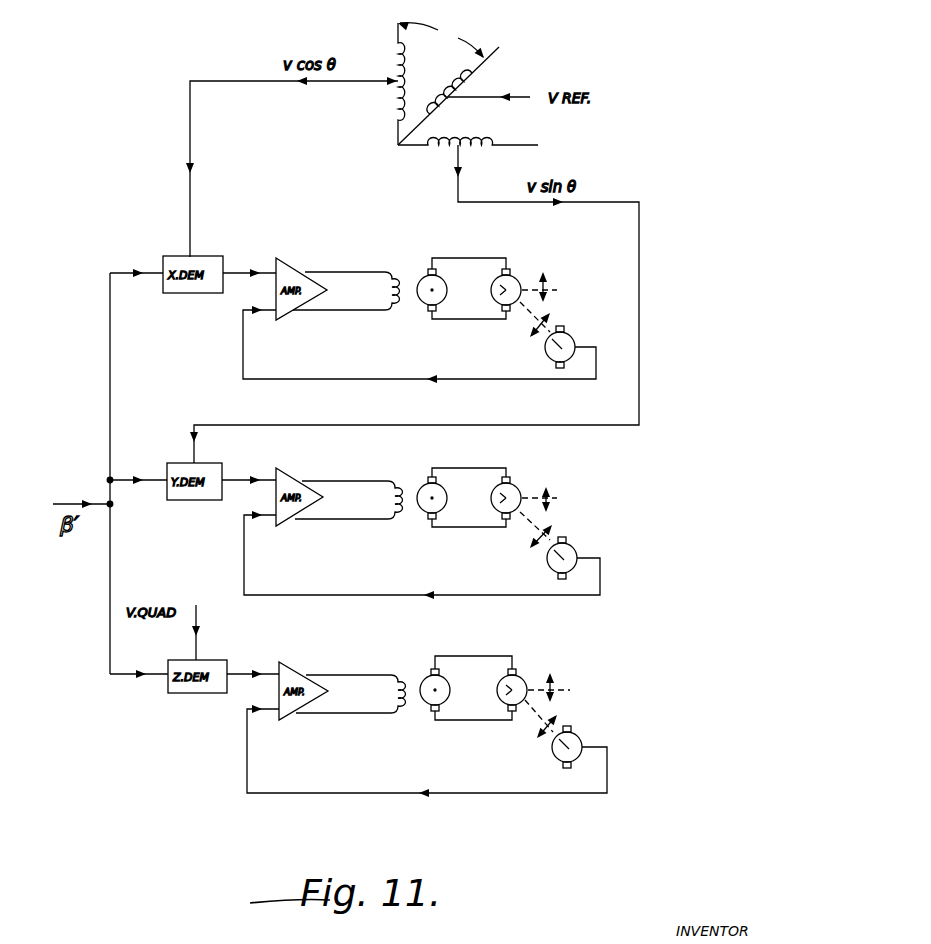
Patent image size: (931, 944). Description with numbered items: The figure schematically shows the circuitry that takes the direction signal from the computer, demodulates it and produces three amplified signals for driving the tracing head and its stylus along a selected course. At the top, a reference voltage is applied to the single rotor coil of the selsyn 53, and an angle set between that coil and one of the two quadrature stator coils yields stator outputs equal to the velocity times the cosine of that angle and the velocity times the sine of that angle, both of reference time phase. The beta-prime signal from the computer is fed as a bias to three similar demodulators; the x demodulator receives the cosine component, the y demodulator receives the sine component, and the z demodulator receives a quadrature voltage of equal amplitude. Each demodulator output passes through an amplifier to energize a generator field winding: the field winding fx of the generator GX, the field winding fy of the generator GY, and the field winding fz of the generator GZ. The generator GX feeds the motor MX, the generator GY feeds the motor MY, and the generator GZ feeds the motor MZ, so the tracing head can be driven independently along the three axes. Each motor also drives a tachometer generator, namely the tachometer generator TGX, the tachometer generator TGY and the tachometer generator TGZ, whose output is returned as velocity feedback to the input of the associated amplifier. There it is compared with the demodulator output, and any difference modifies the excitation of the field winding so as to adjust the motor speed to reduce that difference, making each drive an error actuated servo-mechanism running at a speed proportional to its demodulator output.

The selsyn 53 is at (467, 82).
The field winding fx is at (398, 275).
The generator GX is at (423, 298).
The motor MX is at (507, 285).
The tachometer generator TGX is at (570, 341).
The field winding fy is at (402, 485).
The generator GY is at (427, 507).
The motor MY is at (510, 493).
The tachometer generator TGY is at (570, 553).
The field winding fz is at (405, 677).
The generator GZ is at (432, 698).
The motor MZ is at (513, 687).
The tachometer generator TGZ is at (578, 742).